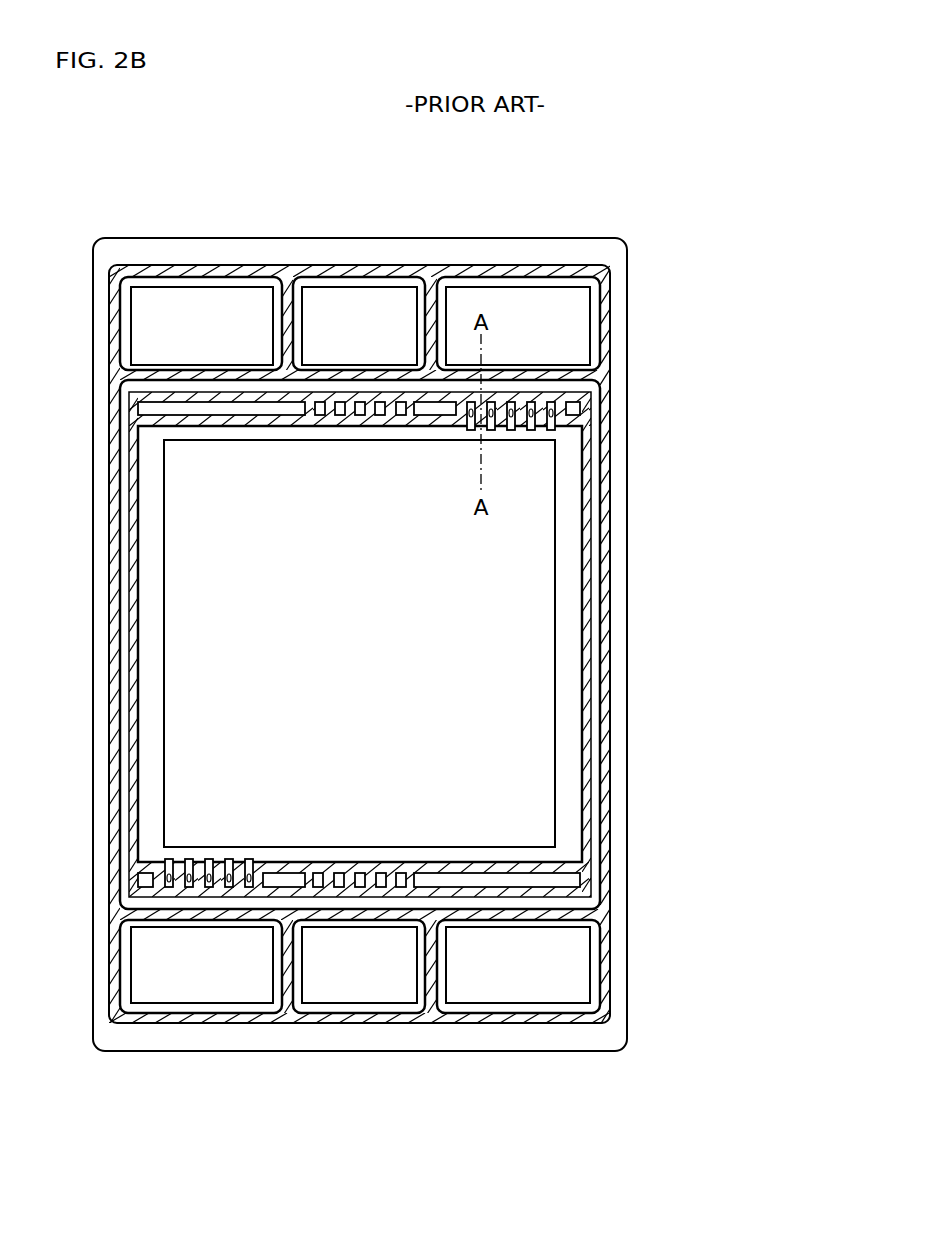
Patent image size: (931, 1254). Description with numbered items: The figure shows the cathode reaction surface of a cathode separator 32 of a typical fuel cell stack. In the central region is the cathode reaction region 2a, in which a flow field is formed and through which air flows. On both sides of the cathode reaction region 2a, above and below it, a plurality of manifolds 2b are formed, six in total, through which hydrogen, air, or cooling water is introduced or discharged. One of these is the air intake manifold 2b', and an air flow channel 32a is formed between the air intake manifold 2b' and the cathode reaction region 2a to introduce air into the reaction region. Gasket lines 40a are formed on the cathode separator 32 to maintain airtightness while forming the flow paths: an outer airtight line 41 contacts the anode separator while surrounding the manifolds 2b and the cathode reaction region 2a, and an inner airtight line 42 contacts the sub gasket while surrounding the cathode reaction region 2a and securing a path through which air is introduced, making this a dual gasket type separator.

The cathode separator 32 is at (144, 214).
The air flow channel 32a is at (537, 396).
The cathode reaction region 2a is at (555, 650).
The manifolds 2b is at (429, 579).
The air intake manifold 2b' is at (520, 258).
The gasket lines 40a is at (463, 644).
The outer airtight line 41 is at (612, 470).
The inner airtight line 42 is at (592, 557).